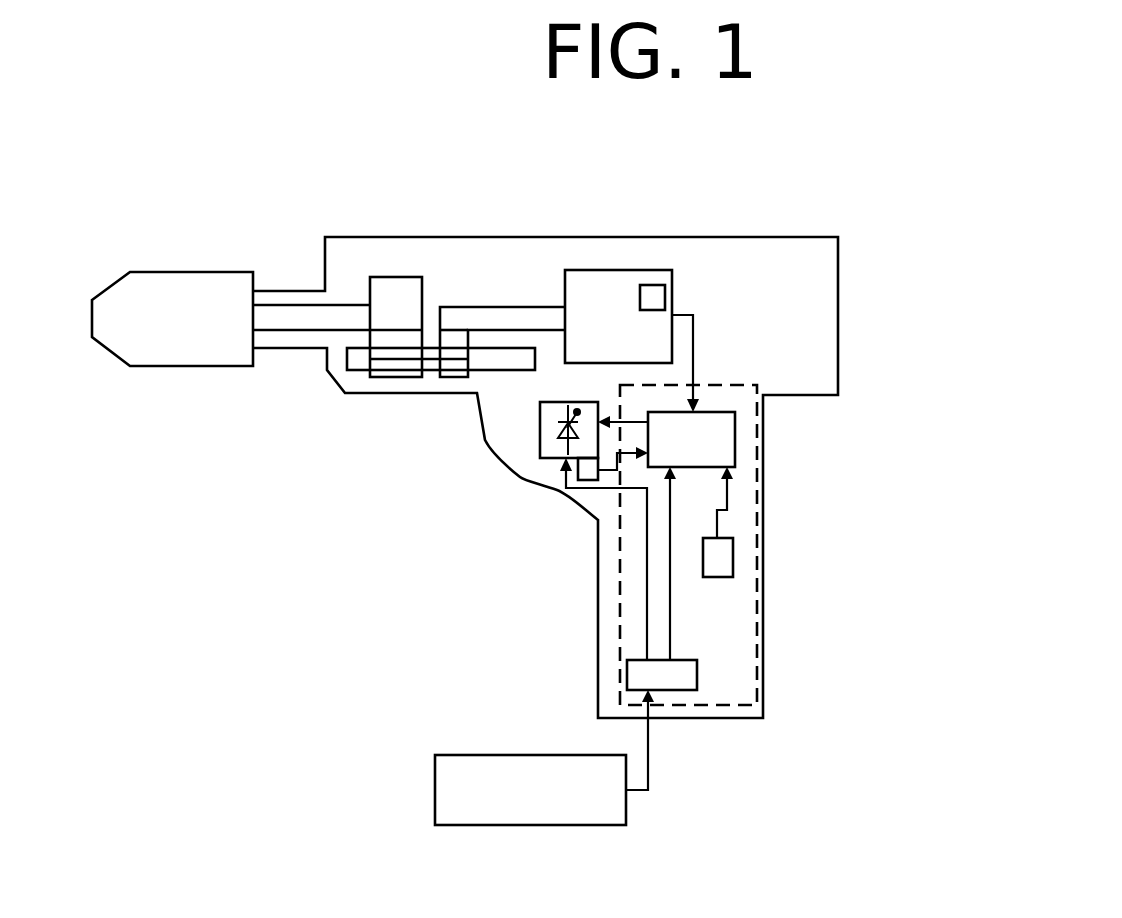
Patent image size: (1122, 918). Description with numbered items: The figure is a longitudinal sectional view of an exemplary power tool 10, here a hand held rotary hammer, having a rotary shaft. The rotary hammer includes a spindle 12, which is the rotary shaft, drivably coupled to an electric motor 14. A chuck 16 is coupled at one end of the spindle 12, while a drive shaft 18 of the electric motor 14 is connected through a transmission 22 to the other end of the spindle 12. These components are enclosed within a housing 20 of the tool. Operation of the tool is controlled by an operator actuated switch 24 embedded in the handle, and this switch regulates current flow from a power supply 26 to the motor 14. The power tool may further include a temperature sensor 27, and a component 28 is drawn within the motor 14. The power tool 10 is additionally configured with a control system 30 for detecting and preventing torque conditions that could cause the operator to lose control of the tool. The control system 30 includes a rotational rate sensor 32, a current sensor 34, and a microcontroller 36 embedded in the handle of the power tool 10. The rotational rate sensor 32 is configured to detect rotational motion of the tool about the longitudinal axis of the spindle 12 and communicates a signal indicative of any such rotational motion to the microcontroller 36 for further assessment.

The power tool 10 is at (964, 321).
The spindle 12 is at (314, 332).
The electric motor 14 is at (672, 278).
The chuck 16 is at (113, 282).
The drive shaft 18 is at (472, 306).
The housing 20 is at (788, 238).
The transmission 22 is at (490, 371).
The operator actuated switch 24 is at (542, 460).
The power supply 26 is at (435, 763).
The temperature sensor 27 is at (599, 458).
The encoder 28 is at (640, 289).
The control system 30 is at (618, 590).
The rotational rate sensor 32 is at (733, 565).
The current sensor 34 is at (627, 677).
The microcontroller 36 is at (735, 437).